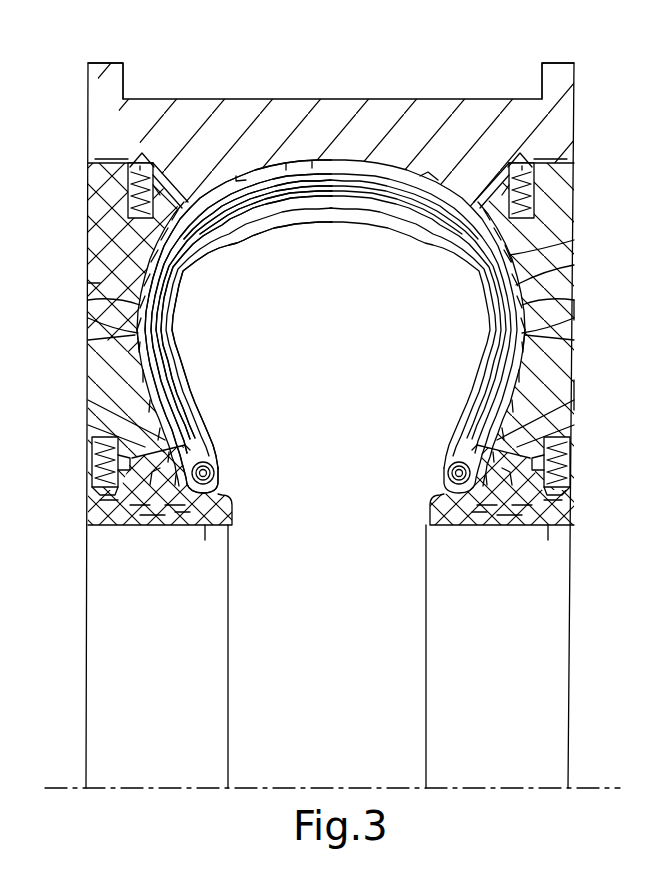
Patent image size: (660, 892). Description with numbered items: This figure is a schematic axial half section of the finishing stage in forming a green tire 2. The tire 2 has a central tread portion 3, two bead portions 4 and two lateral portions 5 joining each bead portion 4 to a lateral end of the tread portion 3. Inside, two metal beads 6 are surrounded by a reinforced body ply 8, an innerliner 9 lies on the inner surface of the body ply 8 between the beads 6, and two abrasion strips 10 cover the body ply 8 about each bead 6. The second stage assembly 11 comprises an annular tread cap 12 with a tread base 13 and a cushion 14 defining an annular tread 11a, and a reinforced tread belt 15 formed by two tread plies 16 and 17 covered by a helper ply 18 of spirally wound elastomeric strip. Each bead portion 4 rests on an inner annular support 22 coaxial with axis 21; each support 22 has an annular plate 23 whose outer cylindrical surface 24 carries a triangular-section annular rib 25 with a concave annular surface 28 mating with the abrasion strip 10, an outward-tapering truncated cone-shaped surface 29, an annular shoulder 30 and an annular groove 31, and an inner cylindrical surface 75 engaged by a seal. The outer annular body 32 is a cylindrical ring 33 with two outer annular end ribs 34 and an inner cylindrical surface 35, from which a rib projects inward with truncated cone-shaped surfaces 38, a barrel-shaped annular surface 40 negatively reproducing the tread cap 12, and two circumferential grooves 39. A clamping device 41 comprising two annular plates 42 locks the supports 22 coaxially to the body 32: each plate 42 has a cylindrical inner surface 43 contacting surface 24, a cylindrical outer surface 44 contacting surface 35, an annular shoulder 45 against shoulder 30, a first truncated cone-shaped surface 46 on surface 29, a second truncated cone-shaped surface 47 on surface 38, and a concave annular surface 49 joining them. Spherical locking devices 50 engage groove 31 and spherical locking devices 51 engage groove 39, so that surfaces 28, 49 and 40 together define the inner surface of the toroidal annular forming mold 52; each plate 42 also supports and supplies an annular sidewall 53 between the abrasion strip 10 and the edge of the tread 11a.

The tire 2 is at (562, 282).
The central tread portion 3 is at (372, 145).
The bead portion 4 is at (162, 432).
The lateral portion 5 is at (132, 327).
The metal bead 6 is at (212, 476).
The reinforced body ply 8 is at (185, 360).
The innerliner 9 is at (208, 392).
The abrasion strip 10 is at (220, 493).
The second stage assembly 11 is at (508, 262).
The annular tread 11a is at (430, 165).
The annular tread cap 12 is at (238, 178).
The tread base 13 is at (313, 165).
The cushion 14 is at (288, 165).
The reinforced tread belt 15 is at (90, 283).
The tread ply 16 is at (302, 210).
The tread ply 17 is at (324, 218).
The helper ply 18 is at (362, 215).
The axis 21 is at (250, 784).
The inner annular support 22 is at (82, 600).
The annular plate 23 is at (160, 540).
The outer cylindrical surface 24 is at (136, 528).
The annular rib 25 is at (172, 527).
The concave annular surface 28 is at (188, 452).
The truncated cone-shaped surface 29 is at (143, 447).
The annular shoulder 30 is at (118, 466).
The annular groove 31 is at (92, 490).
The outer annular body 32 is at (578, 92).
The cylindrical ring 33 is at (208, 105).
The outer annular end rib 34 is at (82, 80).
The cylindrical surface 35 is at (100, 170).
The truncated cone-shaped surface 38 is at (170, 218).
The circumferential groove 39 is at (127, 190).
The barrel-shaped annular surface 40 is at (272, 215).
The clamping device 41 is at (578, 398).
The annular plate 42 is at (86, 352).
The cylindrical inner surface 43 is at (106, 528).
The cylindrical outer surface 44 is at (140, 160).
The annular shoulder 45 is at (178, 530).
The first truncated cone-shaped surface 46 is at (226, 516).
The second truncated cone-shaped surface 47 is at (172, 178).
The concave annular surface 49 is at (150, 326).
The spherical locking device 50 is at (92, 448).
The spherical locking device 51 is at (158, 195).
The toroidal annular forming mold 52 is at (578, 312).
The annular sidewall 53 is at (110, 310).
The inner cylindrical surface 75 is at (206, 530).